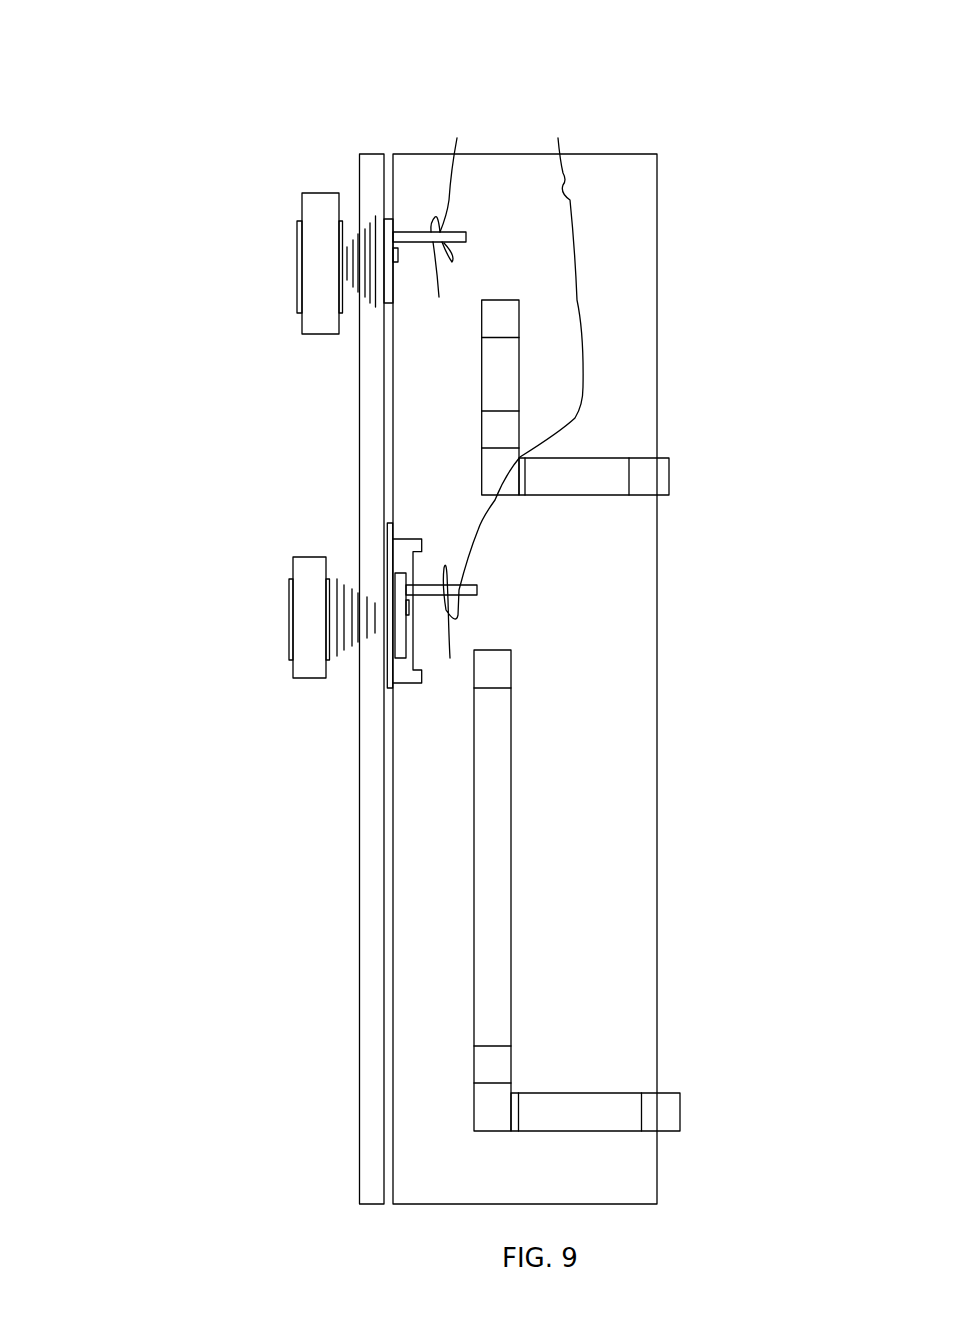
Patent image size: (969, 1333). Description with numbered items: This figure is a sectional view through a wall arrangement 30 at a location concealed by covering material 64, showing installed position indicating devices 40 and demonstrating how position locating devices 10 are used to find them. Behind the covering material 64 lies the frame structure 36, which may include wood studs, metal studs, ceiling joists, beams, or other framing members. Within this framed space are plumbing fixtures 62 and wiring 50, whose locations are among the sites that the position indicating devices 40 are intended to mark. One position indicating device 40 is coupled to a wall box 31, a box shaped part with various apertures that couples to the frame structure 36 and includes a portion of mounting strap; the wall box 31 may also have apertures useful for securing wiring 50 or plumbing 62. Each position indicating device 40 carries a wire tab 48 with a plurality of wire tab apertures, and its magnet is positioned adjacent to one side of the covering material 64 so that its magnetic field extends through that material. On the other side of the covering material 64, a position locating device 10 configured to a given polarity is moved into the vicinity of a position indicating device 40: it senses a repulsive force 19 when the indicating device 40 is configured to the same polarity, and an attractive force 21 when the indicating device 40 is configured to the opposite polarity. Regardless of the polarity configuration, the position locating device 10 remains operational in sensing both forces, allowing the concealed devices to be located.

The wall arrangement 30 is at (415, 602).
The covering material 64 is at (347, 1157).
The frame structure 36 is at (612, 778).
The position locating device 10 is at (310, 325).
The attractive force 21 is at (370, 304).
The repulsive force 19 is at (366, 638).
The position indicating device 40 is at (380, 223).
The wall box 31 is at (402, 675).
The wire tab 48 is at (468, 235).
The wiring 50 is at (543, 352).
The plumbing fixtures 62 is at (638, 473).